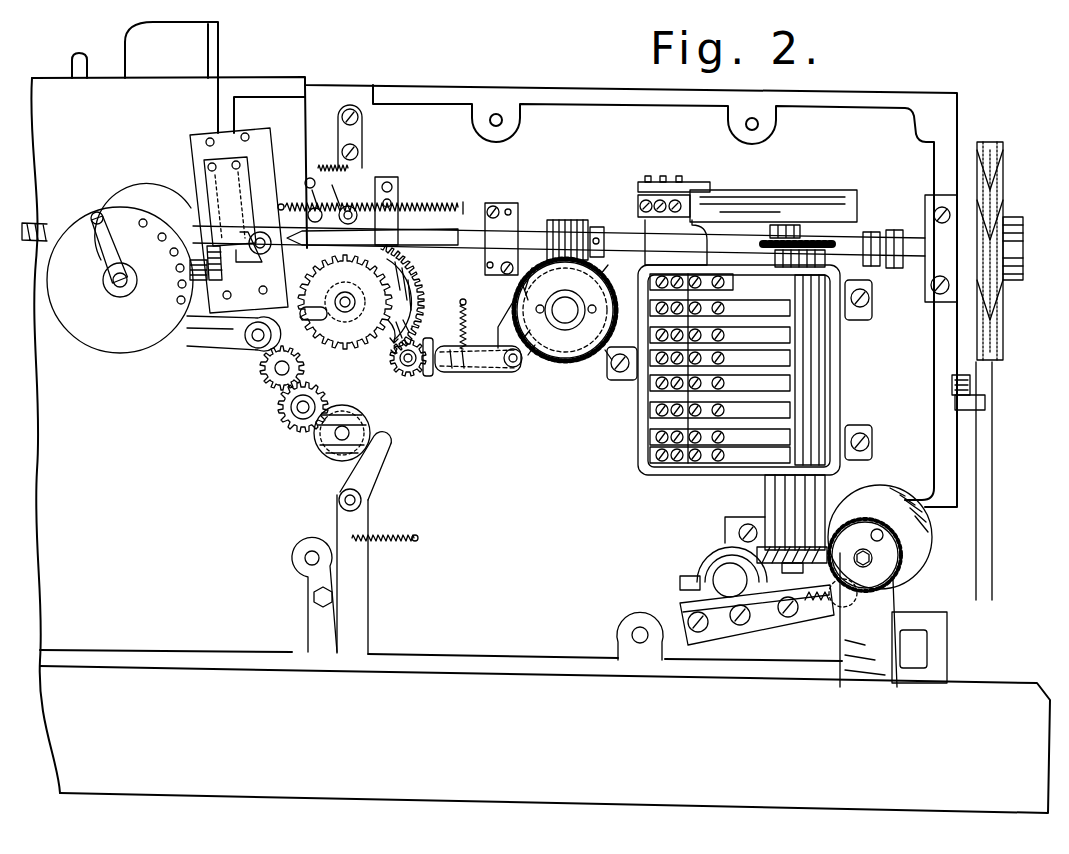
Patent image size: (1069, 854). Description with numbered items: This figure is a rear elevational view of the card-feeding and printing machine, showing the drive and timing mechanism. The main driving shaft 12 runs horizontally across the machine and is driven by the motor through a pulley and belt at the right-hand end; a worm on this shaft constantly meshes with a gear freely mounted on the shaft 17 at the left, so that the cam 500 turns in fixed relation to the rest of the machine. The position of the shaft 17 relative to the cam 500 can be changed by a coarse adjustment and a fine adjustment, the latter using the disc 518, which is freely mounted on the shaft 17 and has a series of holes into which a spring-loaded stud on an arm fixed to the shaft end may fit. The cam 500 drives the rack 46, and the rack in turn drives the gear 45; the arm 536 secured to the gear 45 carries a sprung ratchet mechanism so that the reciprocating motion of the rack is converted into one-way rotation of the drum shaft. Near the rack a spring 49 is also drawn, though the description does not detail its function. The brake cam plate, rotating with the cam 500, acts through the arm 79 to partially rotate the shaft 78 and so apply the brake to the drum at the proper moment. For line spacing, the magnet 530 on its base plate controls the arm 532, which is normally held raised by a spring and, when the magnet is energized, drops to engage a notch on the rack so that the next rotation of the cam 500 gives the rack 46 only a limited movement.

The main driving shaft 12 is at (624, 233).
The shaft 17 is at (115, 288).
The gear 45 is at (348, 311).
The rack 46 is at (410, 255).
The spring 49 is at (432, 208).
The shaft 78 is at (257, 350).
The arm 79 is at (203, 343).
The cam 500 is at (140, 190).
The disc 518 is at (116, 352).
The magnet 530 is at (236, 202).
The arm 532 is at (300, 235).
The arm 536 is at (305, 362).